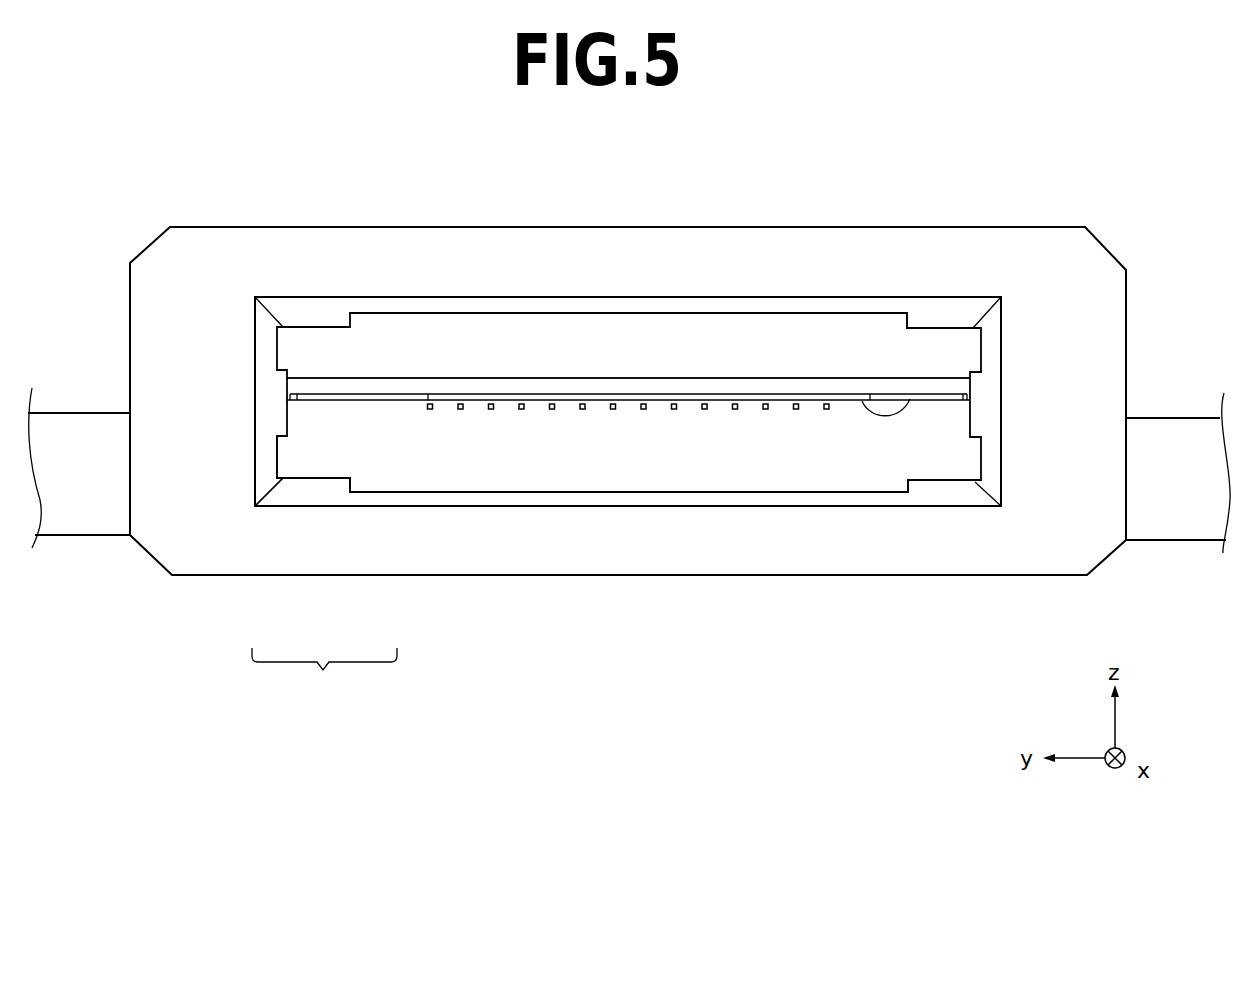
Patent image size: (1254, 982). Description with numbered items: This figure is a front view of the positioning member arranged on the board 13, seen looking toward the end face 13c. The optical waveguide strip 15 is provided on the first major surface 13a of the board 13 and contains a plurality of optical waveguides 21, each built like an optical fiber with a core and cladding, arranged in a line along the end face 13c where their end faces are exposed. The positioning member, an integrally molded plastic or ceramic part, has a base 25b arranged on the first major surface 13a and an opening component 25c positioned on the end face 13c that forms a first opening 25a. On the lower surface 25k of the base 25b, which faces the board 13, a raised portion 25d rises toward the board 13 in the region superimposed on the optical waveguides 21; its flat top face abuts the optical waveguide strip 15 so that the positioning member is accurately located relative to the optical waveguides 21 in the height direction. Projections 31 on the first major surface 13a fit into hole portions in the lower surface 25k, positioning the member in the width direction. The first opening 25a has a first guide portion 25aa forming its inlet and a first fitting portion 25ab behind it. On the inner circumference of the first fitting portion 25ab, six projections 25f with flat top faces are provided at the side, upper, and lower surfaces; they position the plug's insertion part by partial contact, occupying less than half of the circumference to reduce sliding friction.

The board 13 is at (1150, 438).
The first major surface 13a is at (1192, 418).
The end face 13c is at (1168, 517).
The optical waveguide strip 15 is at (566, 425).
The optical waveguides 21 is at (461, 409).
The first opening 25a is at (324, 678).
The first guide portion 25aa is at (312, 495).
The first fitting portion 25ab is at (350, 476).
The base 25b is at (387, 342).
The opening component 25c is at (933, 568).
The raised portion 25d is at (833, 402).
The projections 25f is at (920, 323).
The lower surface 25k is at (865, 400).
The projections 31 is at (337, 397).